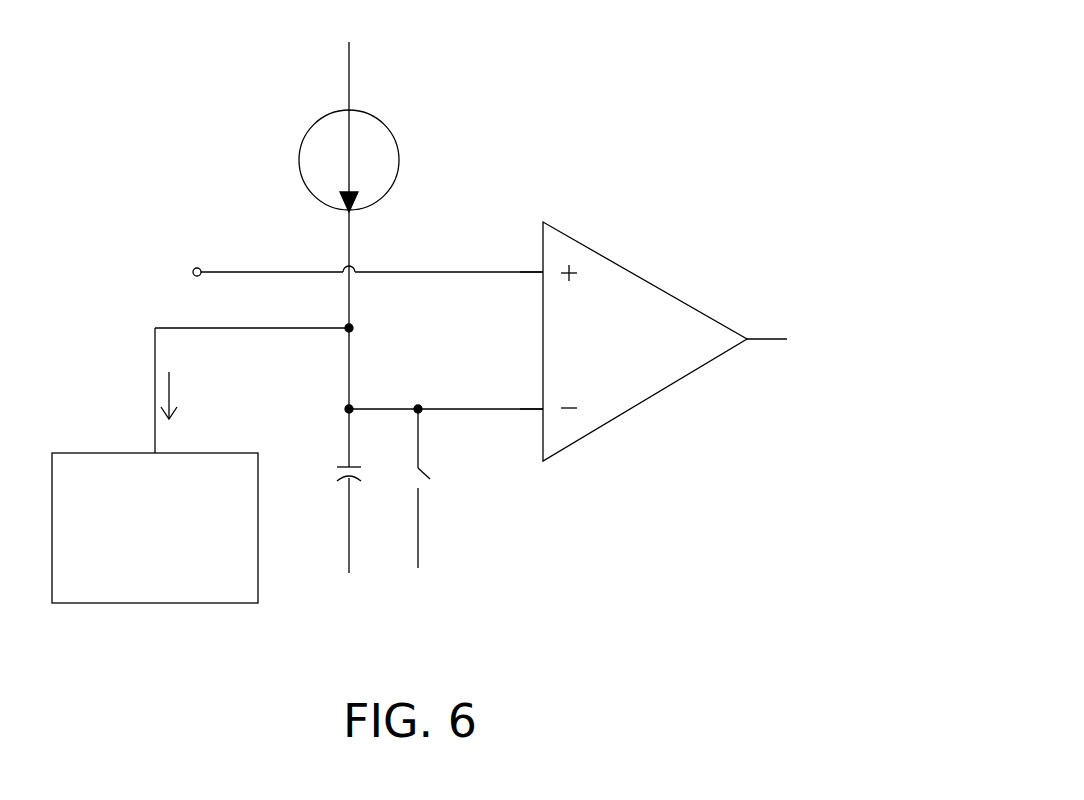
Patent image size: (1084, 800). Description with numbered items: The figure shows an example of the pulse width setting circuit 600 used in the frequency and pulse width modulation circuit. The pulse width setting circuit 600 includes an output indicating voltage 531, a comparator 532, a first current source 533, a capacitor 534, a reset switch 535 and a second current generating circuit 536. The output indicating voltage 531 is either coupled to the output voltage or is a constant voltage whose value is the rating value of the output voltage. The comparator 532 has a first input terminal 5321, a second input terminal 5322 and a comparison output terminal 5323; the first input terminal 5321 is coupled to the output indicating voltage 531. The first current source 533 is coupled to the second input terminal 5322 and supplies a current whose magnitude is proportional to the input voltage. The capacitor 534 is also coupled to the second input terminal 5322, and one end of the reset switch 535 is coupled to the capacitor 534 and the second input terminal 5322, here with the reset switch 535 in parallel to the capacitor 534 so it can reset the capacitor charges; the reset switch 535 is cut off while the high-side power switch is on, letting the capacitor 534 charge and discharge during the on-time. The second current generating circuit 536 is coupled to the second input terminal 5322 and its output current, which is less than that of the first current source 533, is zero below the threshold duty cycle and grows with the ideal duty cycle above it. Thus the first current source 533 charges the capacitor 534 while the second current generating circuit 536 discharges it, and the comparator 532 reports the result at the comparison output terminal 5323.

The pulse width setting circuit 600 is at (782, 49).
The output indicating voltage 531 is at (197, 268).
The comparator 532 is at (647, 353).
The first current source 533 is at (300, 158).
The capacitor 534 is at (337, 467).
The reset switch 535 is at (430, 479).
The second current generating circuit 536 is at (178, 590).
The first input terminal 5321 is at (543, 272).
The second input terminal 5322 is at (543, 410).
The comparison output terminal 5323 is at (747, 338).